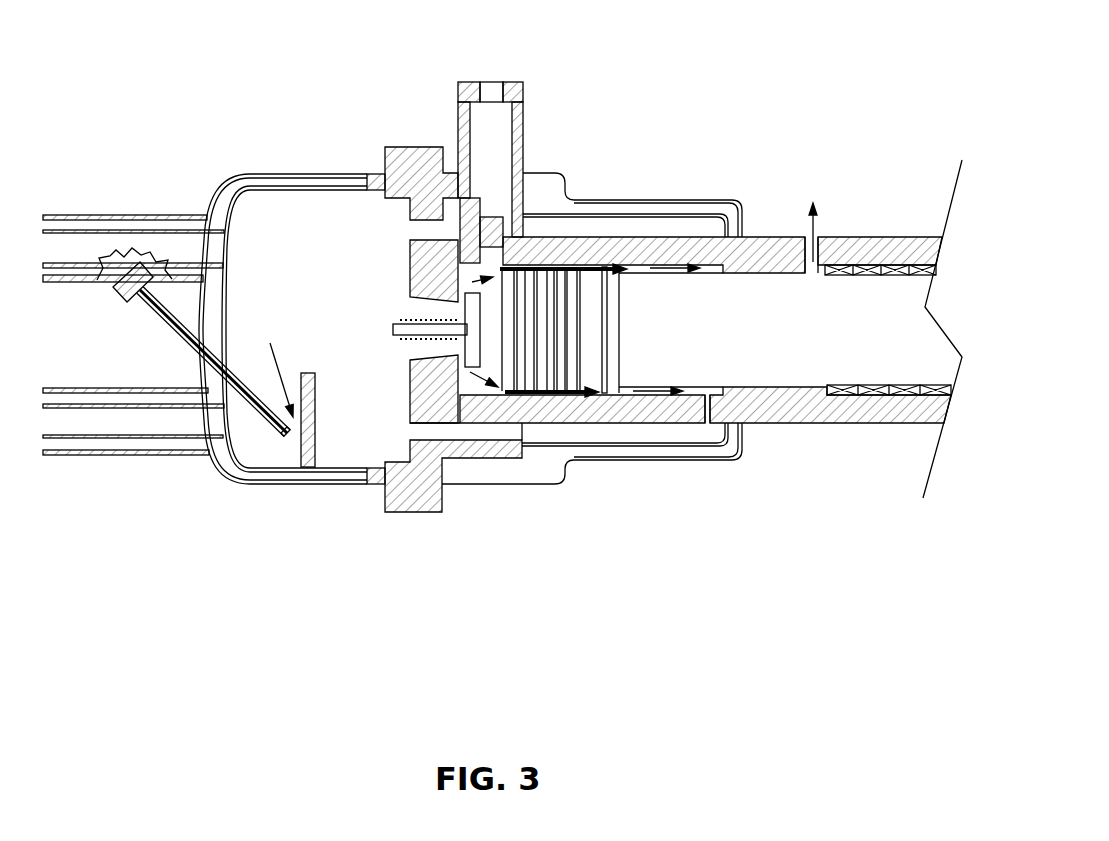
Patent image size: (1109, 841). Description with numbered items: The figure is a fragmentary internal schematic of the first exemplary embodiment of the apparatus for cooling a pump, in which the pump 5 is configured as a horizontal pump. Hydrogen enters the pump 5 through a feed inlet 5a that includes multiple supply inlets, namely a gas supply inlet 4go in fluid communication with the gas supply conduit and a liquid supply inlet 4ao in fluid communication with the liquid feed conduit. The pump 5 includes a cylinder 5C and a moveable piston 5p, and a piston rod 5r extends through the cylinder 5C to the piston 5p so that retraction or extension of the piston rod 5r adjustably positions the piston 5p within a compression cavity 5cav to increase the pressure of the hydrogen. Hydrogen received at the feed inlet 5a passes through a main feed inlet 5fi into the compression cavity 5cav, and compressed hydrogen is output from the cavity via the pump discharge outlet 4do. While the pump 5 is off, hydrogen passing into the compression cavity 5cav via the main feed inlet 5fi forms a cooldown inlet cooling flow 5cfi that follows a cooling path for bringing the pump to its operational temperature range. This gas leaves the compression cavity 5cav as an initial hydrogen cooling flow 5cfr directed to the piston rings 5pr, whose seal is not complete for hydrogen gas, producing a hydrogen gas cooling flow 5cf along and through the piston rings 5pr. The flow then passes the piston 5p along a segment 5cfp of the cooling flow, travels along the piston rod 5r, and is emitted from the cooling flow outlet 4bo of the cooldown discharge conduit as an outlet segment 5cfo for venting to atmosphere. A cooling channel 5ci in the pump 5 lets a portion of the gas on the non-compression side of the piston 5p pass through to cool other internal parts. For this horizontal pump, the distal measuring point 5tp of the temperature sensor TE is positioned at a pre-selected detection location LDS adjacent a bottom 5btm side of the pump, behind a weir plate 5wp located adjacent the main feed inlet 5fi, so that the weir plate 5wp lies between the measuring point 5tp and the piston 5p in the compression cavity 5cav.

The pump discharge outlet 4do is at (490, 88).
The compression cavity 5cav is at (463, 278).
The initial hydrogen cooling flow 5cfr is at (482, 277).
The feed inlet 5a is at (246, 275).
The gas supply inlet 4go is at (180, 232).
The piston rings 5pr is at (550, 290).
The cooling flow outlet 4bo is at (805, 243).
The outlet segment of the cooldown operation cooling flow 5cfo is at (805, 243).
The cylinder 5C is at (895, 243).
The main feed inlet 5fi is at (410, 302).
The pre-selected detection location LDS is at (273, 365).
The cooldown inlet cooling flow 5cfi is at (400, 352).
The temperature sensor TE is at (137, 303).
The liquid supply inlet 4ao is at (133, 423).
The bottom 5btm is at (268, 467).
The distal measuring point 5tp is at (287, 435).
The weir plate 5wp is at (307, 432).
The cooling channel 5ci is at (505, 433).
The pump 5 is at (542, 566).
The hydrogen gas cooling flow 5cf is at (590, 273).
The segment of the hydrogen cooling flow 5cfp is at (653, 270).
The piston 5p is at (613, 343).
The piston rod 5r is at (848, 344).